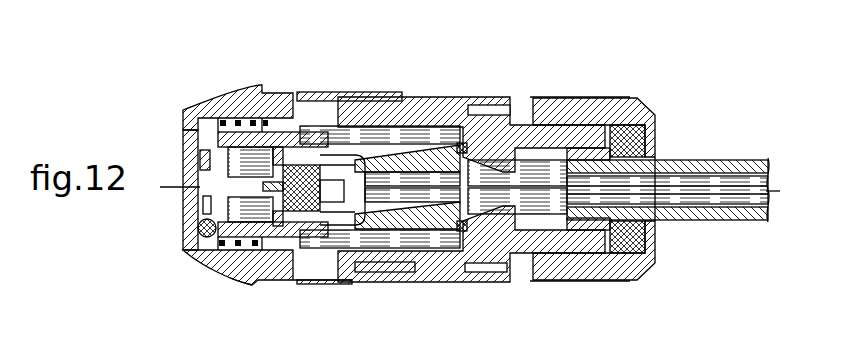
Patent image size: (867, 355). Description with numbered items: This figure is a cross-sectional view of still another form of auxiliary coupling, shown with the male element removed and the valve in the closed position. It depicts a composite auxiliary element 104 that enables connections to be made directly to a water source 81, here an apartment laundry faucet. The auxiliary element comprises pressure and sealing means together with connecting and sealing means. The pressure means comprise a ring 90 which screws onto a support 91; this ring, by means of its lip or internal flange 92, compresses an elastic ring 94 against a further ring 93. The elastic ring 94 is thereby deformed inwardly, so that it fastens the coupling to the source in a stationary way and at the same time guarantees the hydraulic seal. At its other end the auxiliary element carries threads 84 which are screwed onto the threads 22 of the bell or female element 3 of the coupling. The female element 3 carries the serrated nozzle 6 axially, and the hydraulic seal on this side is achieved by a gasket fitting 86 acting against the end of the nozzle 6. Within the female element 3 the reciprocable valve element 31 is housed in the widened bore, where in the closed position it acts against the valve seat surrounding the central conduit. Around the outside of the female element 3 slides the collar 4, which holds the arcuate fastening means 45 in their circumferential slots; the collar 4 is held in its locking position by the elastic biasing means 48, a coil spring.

The composite auxiliary element 104 is at (480, 74).
The elastic or biasing means 48 is at (226, 101).
The threads 84 is at (346, 92).
The nozzle 6 is at (380, 150).
The gasket fitting 86 is at (452, 115).
The elastic ring 94 is at (633, 100).
The lip or internal flange 92 is at (655, 238).
The water source 81 is at (746, 221).
The ring 93 is at (604, 262).
The ring 90 is at (628, 268).
The support 91 is at (432, 268).
The threads 22 is at (390, 273).
The bell or female element 3 is at (350, 280).
The valve element 31 is at (300, 262).
The sliding collar 4 is at (247, 284).
The fastening means 45 is at (210, 247).